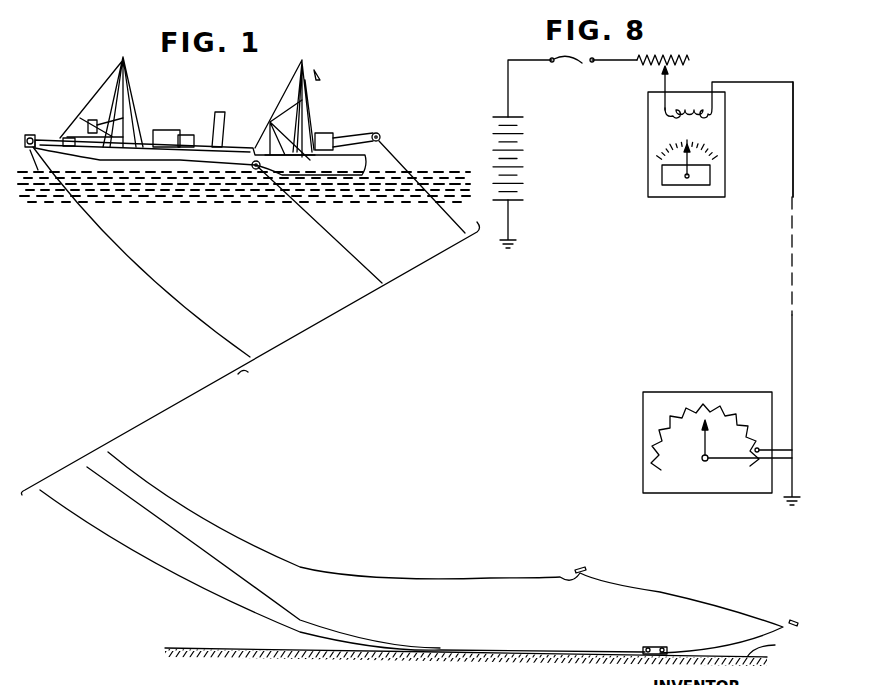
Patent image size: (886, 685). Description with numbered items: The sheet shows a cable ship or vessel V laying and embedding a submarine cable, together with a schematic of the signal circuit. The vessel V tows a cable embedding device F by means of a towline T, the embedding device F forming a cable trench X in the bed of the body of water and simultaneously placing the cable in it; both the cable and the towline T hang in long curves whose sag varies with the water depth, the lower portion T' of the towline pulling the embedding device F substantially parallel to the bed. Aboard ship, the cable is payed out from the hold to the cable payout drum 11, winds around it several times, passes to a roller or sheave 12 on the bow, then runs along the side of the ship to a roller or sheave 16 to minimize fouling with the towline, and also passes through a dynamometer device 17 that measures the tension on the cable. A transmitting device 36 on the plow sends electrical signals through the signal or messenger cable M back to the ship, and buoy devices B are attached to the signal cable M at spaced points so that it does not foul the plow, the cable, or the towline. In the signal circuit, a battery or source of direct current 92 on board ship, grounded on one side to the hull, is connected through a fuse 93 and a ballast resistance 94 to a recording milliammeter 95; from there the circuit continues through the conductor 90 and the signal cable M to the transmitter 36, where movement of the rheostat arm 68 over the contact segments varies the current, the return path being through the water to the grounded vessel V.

In FIG. 1, the roller or sheave 12 is at (30, 134).
In FIG. 1, the dynamometer device 17 is at (69, 138).
In FIG. 1, the cable payout drum 11 is at (110, 133).
In FIG. 1, the roller or sheave 16 is at (252, 162).
In FIG. 1, the cable ship or vessel V is at (150, 114).
In FIG. 1, the towline T is at (141, 252).
In FIG. 1, the towing cable lower portion T' is at (342, 571).
In FIG. 1, the signal or messenger cable M is at (403, 166).
In FIG. 8, the signal or messenger cable M is at (790, 268).
In FIG. 1, the buoy devices B is at (581, 569).
In FIG. 1, the cable embedding device F is at (656, 647).
In FIG. 1, the cable trench X is at (771, 649).
In FIG. 8, the battery or source of direct current 92 is at (520, 149).
In FIG. 8, the fuse 93 is at (578, 63).
In FIG. 8, the ballast resistance 94 is at (683, 50).
In FIG. 8, the recording milliammeter 95 is at (648, 143).
In FIG. 8, the signal circuit / conductor 90 is at (793, 148).
In FIG. 8, the transmitting device 36 is at (643, 450).
In FIG. 8, the rheostat arm 68 is at (703, 447).